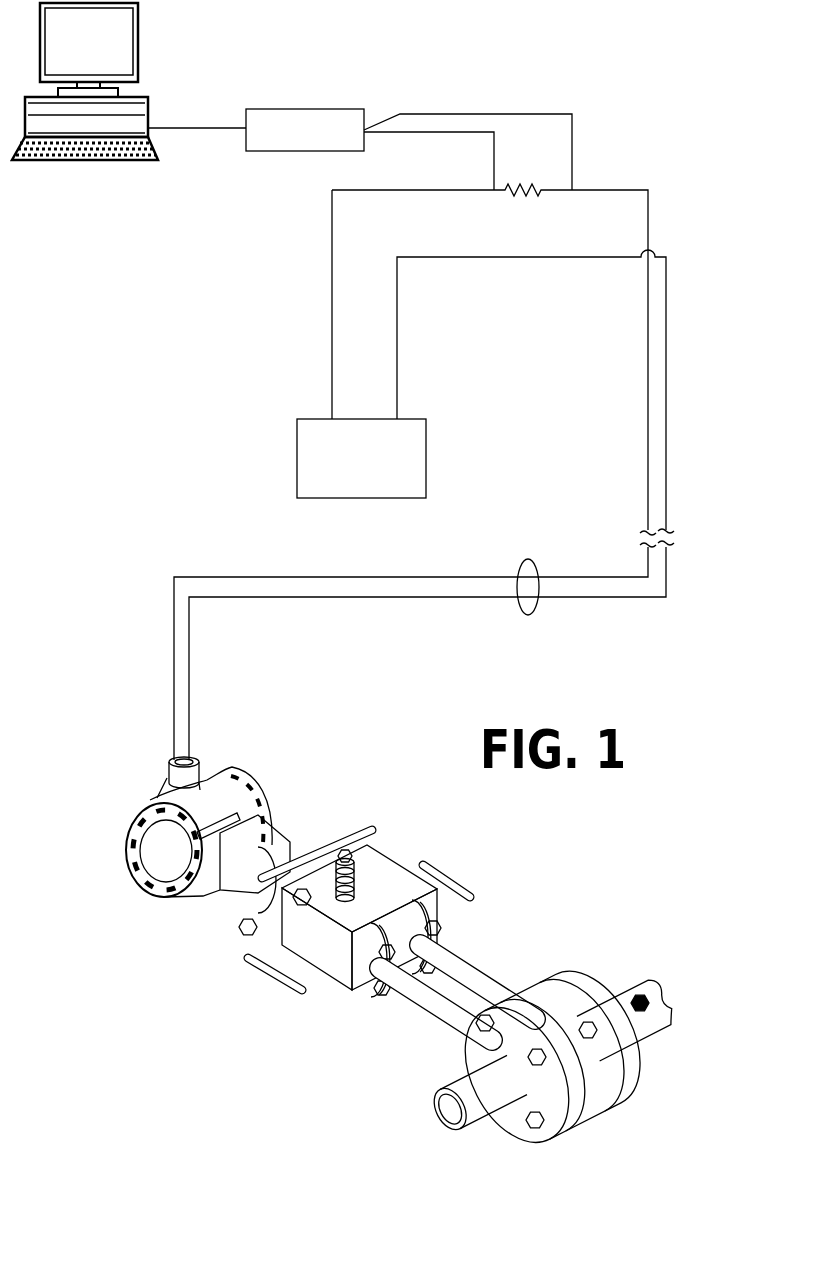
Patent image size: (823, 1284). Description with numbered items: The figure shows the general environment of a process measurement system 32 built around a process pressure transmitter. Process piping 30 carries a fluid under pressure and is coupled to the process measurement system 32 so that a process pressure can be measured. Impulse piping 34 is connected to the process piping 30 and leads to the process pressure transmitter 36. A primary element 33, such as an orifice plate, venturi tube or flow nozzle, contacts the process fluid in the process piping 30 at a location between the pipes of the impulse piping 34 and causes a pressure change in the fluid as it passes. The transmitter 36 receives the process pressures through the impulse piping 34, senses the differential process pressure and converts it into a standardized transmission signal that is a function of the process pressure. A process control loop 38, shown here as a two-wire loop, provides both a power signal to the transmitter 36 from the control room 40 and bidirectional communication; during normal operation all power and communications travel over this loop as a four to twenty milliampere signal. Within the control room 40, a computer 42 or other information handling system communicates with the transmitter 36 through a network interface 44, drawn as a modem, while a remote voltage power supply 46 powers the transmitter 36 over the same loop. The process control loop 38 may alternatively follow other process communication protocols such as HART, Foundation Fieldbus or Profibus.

The process piping 30 is at (650, 1030).
The process measurement system 32 is at (512, 878).
The primary element 33 is at (606, 1101).
The impulse piping 34 is at (487, 980).
The process pressure transmitter 36 is at (262, 768).
The process control loop 38 is at (528, 615).
The control room 40 is at (243, 323).
The computer 42 is at (147, 107).
The network interface 44 is at (307, 109).
The remote voltage power supply 46 is at (337, 498).